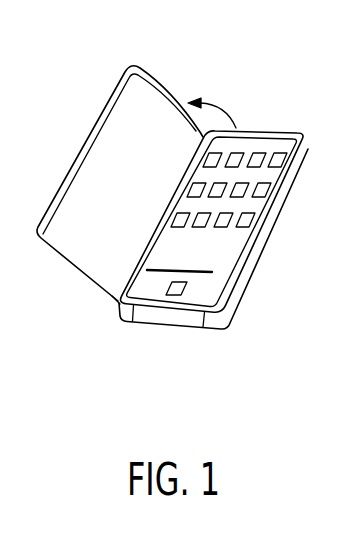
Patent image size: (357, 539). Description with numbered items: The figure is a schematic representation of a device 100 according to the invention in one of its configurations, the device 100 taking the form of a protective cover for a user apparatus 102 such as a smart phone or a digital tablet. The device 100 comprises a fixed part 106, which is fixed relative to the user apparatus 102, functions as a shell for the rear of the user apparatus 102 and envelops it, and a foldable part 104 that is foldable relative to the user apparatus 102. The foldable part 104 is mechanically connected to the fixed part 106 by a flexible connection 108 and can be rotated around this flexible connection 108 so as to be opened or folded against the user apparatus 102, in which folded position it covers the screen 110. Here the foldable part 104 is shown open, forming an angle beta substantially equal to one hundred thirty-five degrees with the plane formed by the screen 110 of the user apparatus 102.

The device 100 is at (171, 207).
The user apparatus 102 is at (163, 309).
The foldable part 104 is at (171, 91).
The fixed part 106 is at (199, 326).
The flexible connection 108 is at (117, 301).
The screen 110 is at (253, 142).